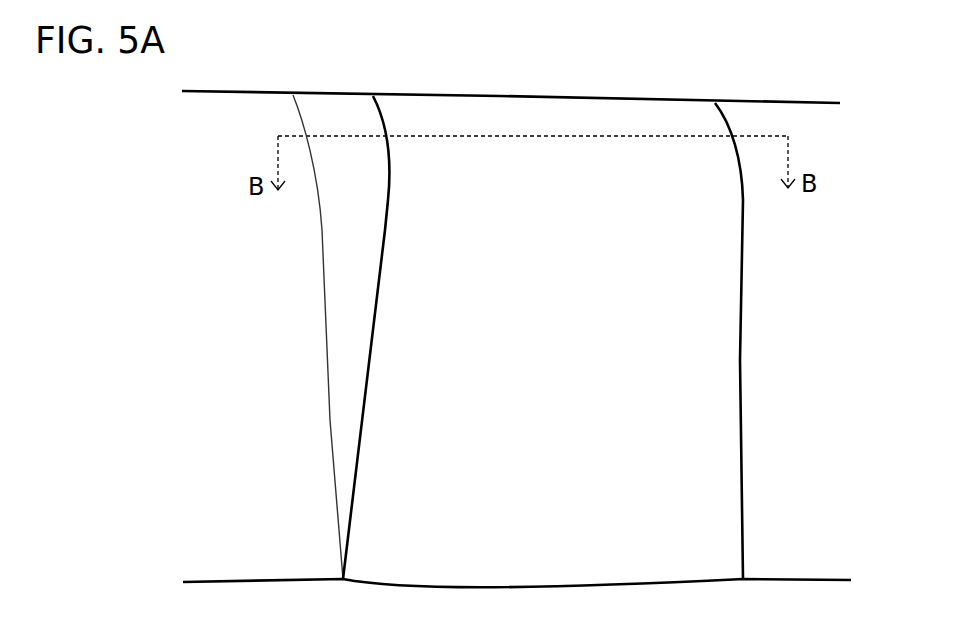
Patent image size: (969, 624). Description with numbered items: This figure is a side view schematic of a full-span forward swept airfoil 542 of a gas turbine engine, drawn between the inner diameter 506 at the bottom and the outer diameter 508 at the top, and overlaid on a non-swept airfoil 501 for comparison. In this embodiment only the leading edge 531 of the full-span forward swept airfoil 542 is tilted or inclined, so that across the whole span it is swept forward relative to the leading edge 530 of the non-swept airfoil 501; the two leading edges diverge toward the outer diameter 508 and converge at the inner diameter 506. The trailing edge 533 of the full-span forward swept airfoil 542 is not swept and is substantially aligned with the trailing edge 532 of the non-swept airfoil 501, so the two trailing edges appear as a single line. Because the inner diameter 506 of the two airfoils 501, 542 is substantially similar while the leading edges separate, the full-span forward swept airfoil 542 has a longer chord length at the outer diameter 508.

The non-swept airfoil 501 is at (698, 341).
The inner diameter 506 is at (220, 515).
The outer diameter 508 is at (216, 136).
The leading edge of the non-swept airfoil 530 is at (372, 290).
The leading edge of the full-span forward swept airfoil 531 is at (328, 405).
The trailing edge of the non-swept airfoil 532 is at (661, 341).
The trailing edge of the full-span forward swept airfoil 533 is at (745, 212).
The full-span forward swept airfoil 542 is at (343, 200).